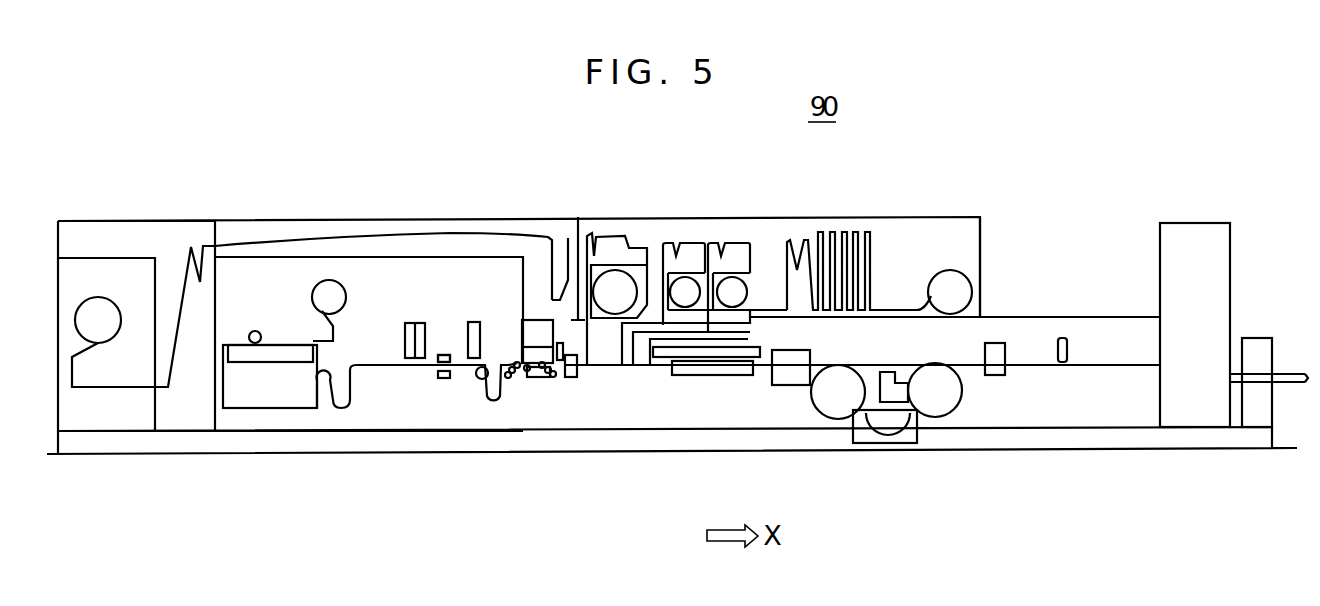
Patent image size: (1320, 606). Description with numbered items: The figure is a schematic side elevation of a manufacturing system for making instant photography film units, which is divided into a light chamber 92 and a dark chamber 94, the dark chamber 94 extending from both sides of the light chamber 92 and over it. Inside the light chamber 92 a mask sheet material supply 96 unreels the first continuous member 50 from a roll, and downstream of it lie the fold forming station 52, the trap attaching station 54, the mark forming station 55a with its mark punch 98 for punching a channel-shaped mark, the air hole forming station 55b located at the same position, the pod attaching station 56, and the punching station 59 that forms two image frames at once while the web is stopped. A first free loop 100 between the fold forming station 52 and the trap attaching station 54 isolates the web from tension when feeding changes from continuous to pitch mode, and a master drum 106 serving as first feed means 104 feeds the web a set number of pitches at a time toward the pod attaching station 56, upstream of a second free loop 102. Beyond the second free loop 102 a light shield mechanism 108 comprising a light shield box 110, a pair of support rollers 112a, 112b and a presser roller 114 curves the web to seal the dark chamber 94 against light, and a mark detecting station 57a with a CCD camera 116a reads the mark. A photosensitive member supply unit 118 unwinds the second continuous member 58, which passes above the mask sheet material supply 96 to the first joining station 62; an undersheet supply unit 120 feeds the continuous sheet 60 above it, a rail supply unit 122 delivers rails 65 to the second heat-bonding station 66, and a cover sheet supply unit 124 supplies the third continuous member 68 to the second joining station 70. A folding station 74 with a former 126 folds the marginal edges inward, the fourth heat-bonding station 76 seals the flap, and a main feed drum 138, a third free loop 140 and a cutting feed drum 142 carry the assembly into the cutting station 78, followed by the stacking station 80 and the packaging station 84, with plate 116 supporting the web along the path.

The first continuous member 50 is at (240, 402).
The fold forming station 52 is at (256, 328).
The trap attaching station 54 is at (410, 375).
The mark forming station 55a is at (452, 325).
The air hole forming station 55b is at (442, 340).
The pod attaching station 56 is at (486, 337).
The mark detecting station 57a is at (556, 336).
The second continuous member 58 is at (463, 236).
The punching station 59 is at (584, 386).
The continuous sheet 60 is at (600, 234).
The first joining station 62 is at (591, 370).
The rails 65 is at (733, 243).
The second heat-bonding station 66 is at (646, 371).
The third continuous member 68 is at (876, 252).
The second joining station 70 is at (668, 353).
The folding station 74 is at (690, 379).
The fourth heat-bonding station 76 is at (815, 354).
The cutting station 78 is at (1009, 342).
The stacking station 80 is at (1110, 342).
The packaging station 84 is at (1196, 238).
The light chamber 92 is at (363, 420).
The dark chamber 94 is at (323, 235).
The mask sheet material supply 96 is at (350, 290).
The mark punch 98 is at (450, 354).
The first free loop 100 is at (337, 412).
The second free loop 102 is at (512, 383).
The first feed means 104 is at (478, 422).
The master drum 106 is at (479, 378).
The light shield mechanism 108 is at (543, 382).
The light shield box 110 is at (556, 383).
The support roller 112a is at (530, 380).
The support roller 112b is at (548, 383).
The presser roller 114 is at (546, 345).
The plate 116 is at (704, 337).
The CCD camera 116a is at (566, 258).
The photosensitive member supply unit 118 is at (103, 296).
The undersheet supply unit 120 is at (641, 264).
The rail supply unit 122 is at (708, 228).
The cover sheet supply unit 124 is at (958, 256).
The former 126 is at (727, 378).
The main feed drum 138 is at (831, 416).
The third free loop 140 is at (889, 444).
The cutting feed drum 142 is at (956, 416).